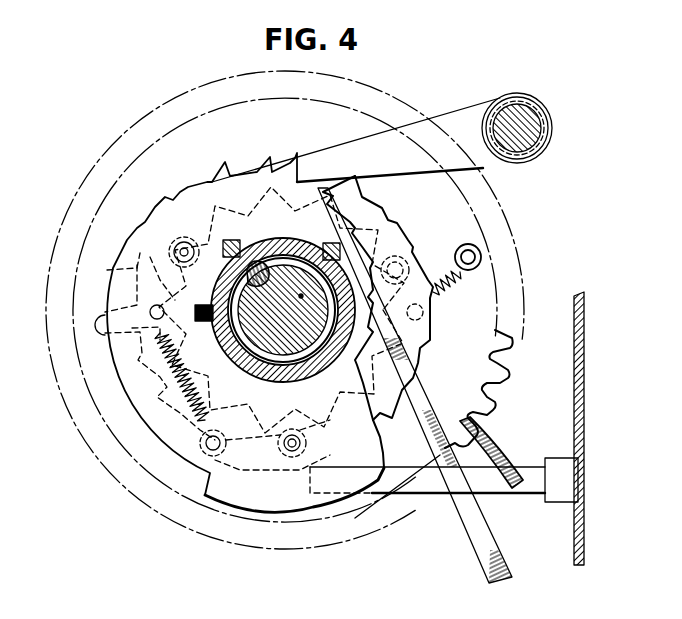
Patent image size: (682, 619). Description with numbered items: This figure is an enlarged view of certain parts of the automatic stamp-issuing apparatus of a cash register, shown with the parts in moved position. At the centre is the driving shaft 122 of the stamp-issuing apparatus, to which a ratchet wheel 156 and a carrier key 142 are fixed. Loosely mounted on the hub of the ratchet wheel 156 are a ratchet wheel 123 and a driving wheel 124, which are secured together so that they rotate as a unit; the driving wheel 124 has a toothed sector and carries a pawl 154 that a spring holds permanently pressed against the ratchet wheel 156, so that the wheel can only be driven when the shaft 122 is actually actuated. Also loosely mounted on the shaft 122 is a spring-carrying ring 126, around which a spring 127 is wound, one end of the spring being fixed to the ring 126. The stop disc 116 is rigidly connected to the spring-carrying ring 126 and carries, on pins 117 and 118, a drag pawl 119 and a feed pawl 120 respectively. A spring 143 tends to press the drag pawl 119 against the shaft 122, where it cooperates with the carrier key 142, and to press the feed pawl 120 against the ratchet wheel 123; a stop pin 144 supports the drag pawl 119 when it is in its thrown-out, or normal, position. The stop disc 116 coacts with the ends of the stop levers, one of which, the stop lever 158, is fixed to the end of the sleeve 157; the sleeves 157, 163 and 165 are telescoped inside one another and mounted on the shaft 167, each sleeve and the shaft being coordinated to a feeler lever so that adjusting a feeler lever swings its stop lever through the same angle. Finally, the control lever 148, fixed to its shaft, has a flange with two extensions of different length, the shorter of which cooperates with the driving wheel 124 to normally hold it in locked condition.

The stop disc 116 is at (156, 206).
The pin 117 is at (188, 248).
The pin 118 is at (298, 439).
The drag pawl 119 is at (150, 257).
The feed pawl 120 is at (258, 466).
The driving shaft 122 is at (287, 258).
The ratchet wheel 123 is at (421, 353).
The driving wheel 124 is at (506, 372).
The spring-carrying ring 126 is at (317, 365).
The spring 127 is at (498, 540).
The carrier key 142 is at (256, 263).
The spring 143 is at (166, 388).
The stop pin 144 is at (412, 495).
The control lever 148 is at (506, 450).
The pawl 154 is at (408, 246).
The ratchet wheel 156 is at (253, 406).
The sleeve 157 is at (531, 101).
The stop lever 158 is at (338, 155).
The sleeve 163 is at (532, 116).
The sleeve 165 is at (552, 129).
The shaft 167 is at (546, 151).